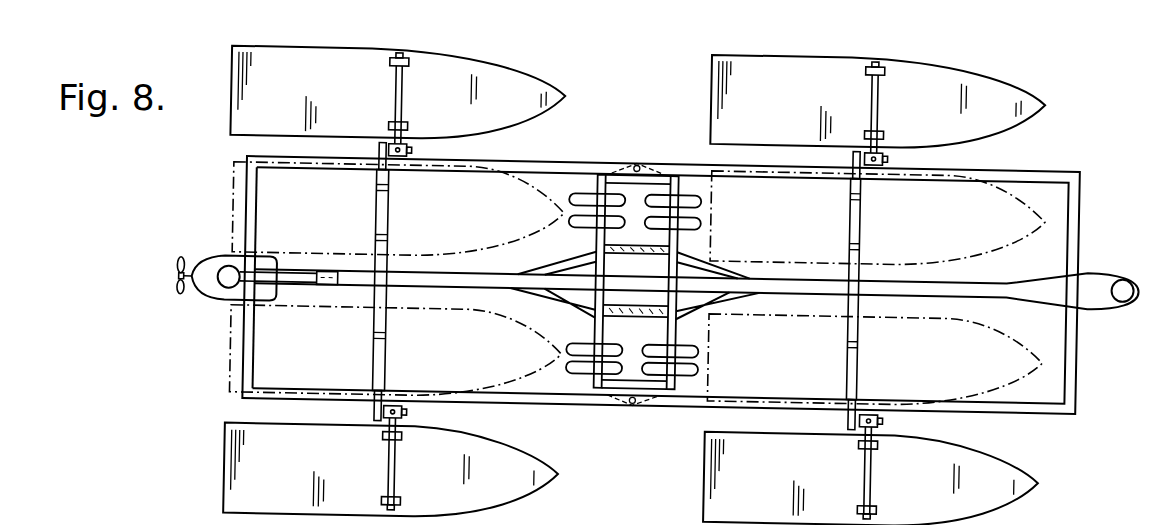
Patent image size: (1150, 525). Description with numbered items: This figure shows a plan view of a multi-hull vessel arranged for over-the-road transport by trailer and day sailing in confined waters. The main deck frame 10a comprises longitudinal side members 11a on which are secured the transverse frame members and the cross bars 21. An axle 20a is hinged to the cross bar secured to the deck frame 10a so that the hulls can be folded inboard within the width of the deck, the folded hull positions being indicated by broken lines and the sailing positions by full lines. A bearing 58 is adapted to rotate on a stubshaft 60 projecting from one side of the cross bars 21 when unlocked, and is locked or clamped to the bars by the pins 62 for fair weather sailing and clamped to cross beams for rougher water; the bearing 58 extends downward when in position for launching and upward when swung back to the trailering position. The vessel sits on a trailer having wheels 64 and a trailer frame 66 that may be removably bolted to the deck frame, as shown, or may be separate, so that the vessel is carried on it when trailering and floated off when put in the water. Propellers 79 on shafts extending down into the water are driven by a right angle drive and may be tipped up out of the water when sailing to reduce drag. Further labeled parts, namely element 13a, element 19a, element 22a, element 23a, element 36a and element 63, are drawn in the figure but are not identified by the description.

The deck frame 10a is at (403, 240).
The longitudinal side members 11a is at (553, 157).
The frame end rail 13a is at (257, 194).
The upper support bracket 19a is at (380, 148).
The axle 20a is at (401, 71).
The cross bars 21 is at (396, 197).
The boat hull 22a is at (770, 53).
The boat hull 23a is at (303, 56).
The trailer tongue 36a is at (208, 261).
The bearing 58 is at (409, 415).
The stubshaft 60 is at (411, 410).
The pins 62 is at (873, 405).
The bracket bolt 63 is at (398, 405).
The wheels 64 is at (701, 213).
The trailer frame 66 is at (657, 155).
The propellers 79 is at (179, 269).